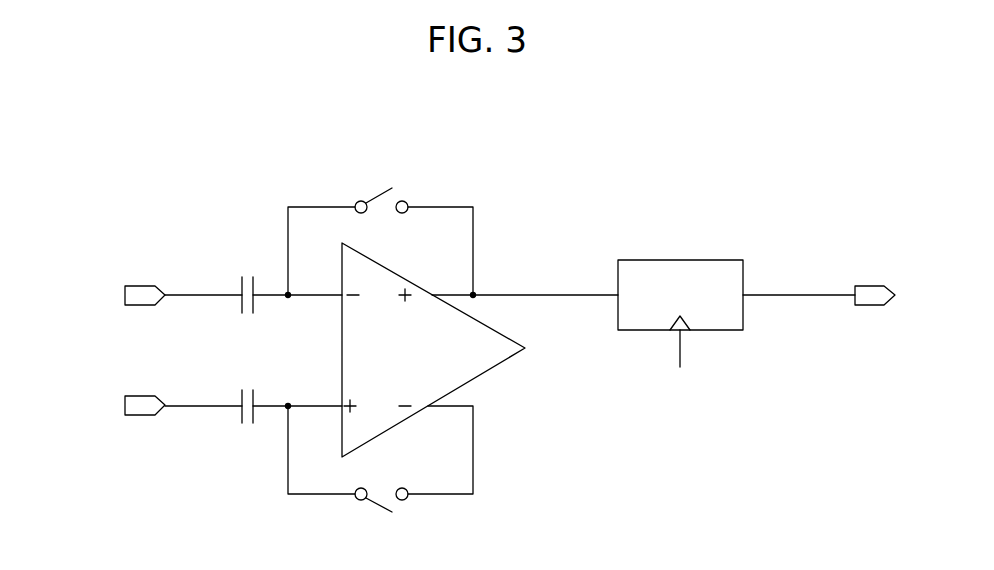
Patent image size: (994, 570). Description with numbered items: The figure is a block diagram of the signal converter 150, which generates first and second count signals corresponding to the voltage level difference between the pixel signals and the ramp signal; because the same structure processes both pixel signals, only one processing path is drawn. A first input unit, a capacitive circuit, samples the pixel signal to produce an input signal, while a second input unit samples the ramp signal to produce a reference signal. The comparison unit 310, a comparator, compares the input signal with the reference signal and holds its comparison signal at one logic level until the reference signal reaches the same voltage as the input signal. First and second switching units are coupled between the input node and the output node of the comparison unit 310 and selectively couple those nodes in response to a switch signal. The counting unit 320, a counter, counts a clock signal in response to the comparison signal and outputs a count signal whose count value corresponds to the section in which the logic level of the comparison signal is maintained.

The signal converter 150 is at (493, 143).
The comparison unit 310 is at (488, 375).
The counting unit 320 is at (680, 260).